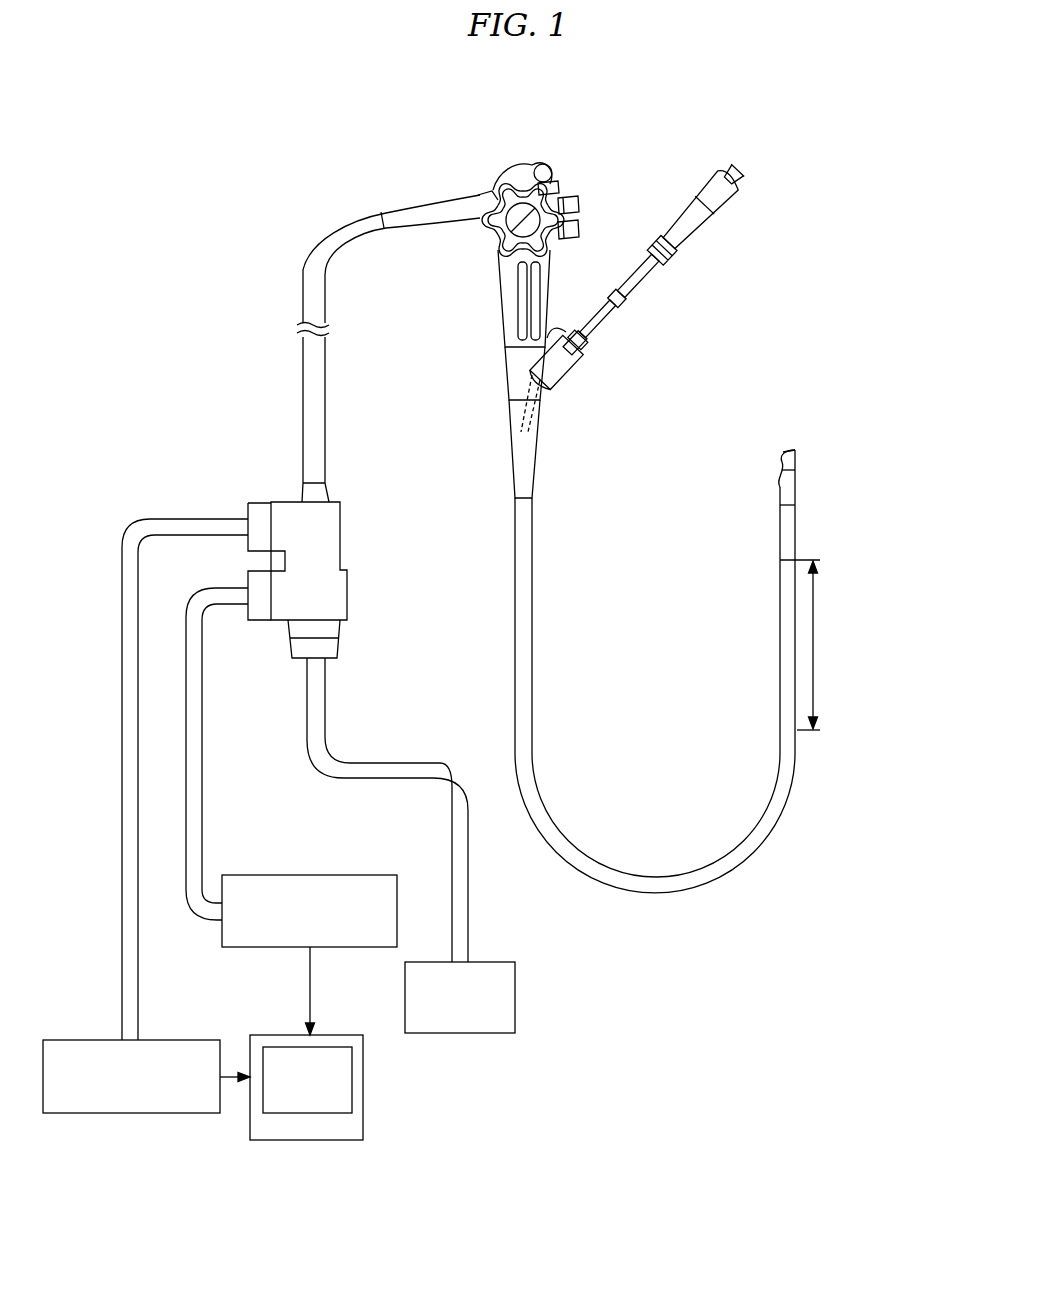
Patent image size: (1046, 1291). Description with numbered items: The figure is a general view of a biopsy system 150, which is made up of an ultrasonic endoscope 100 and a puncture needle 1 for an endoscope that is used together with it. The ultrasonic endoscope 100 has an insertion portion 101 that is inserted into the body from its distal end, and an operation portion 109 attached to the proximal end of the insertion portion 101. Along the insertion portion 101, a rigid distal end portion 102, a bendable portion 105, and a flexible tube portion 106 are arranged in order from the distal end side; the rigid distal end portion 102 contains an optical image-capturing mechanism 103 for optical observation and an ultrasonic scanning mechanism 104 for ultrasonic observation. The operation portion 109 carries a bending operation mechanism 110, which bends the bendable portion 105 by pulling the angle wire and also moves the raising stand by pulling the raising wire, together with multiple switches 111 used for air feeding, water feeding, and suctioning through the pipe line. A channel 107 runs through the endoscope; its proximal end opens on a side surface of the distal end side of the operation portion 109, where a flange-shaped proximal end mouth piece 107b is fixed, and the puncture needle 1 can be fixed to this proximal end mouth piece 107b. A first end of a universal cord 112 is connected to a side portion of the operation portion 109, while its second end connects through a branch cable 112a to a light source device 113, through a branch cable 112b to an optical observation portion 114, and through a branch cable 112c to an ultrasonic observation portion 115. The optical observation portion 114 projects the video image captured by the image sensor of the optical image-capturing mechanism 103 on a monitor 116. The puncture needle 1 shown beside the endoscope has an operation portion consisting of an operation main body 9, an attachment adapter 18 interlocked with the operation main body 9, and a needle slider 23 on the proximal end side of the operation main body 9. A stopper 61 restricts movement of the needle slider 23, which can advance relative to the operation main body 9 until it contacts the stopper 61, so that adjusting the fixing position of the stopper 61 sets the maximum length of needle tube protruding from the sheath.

The biopsy system 150 is at (266, 136).
The ultrasonic endoscope 100 is at (577, 168).
The puncture needle 1 is at (663, 203).
The bending operation mechanism 110 is at (497, 190).
The switches 111 is at (578, 232).
The operation portion 109 is at (488, 331).
The channel 107 is at (510, 392).
The proximal end mouth piece 107b is at (568, 382).
The universal cord 112 is at (315, 245).
The branch cable 112a is at (388, 762).
The branch cable 112b is at (195, 606).
The branch cable 112c is at (152, 526).
The insertion portion 101 is at (681, 651).
The rigid distal end portion 102 is at (719, 448).
The optical image-capturing mechanism 103 is at (788, 466).
The ultrasonic scanning mechanism 104 is at (790, 450).
The bendable portion 105 is at (778, 505).
The flexible tube portion 106 is at (780, 630).
The light source device 113 is at (497, 962).
The optical observation portion 114 is at (292, 875).
The ultrasonic observation portion 115 is at (168, 1040).
The monitor 116 is at (363, 1096).
The needle slider 23 is at (715, 210).
The stopper 61 is at (663, 260).
The operation main body 9 is at (640, 275).
The attachment adapter 18 is at (603, 317).